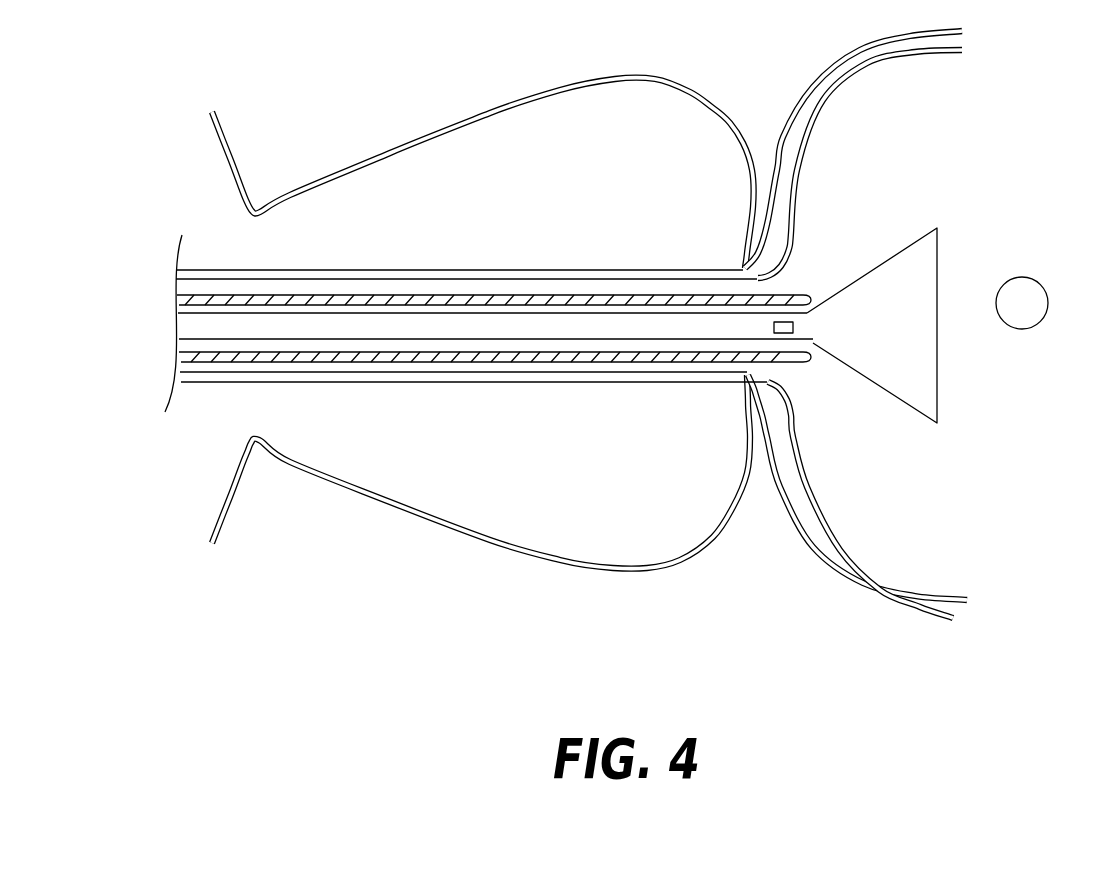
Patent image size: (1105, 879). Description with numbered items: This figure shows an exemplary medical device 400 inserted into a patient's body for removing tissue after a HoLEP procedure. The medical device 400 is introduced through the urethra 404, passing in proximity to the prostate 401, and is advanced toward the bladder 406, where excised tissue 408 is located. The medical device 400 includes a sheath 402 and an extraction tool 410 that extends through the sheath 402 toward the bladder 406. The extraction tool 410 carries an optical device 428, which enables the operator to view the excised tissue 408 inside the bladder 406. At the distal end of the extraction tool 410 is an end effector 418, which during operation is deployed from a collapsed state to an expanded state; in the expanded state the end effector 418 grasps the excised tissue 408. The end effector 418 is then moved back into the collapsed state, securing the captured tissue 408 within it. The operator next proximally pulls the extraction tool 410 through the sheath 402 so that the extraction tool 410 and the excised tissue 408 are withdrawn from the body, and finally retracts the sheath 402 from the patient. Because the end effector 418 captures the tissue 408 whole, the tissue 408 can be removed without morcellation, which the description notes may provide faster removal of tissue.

The medical device 400 is at (474, 331).
The prostate 401 is at (692, 90).
The sheath 402 is at (376, 294).
The urethra 404 is at (650, 383).
The bladder 406 is at (903, 618).
The tissue 408 is at (1022, 329).
The extraction tool 410 is at (428, 362).
The end effector 418 is at (892, 260).
The optical device 428 is at (795, 328).